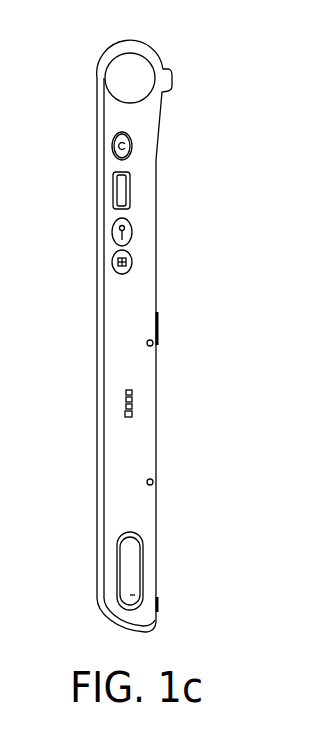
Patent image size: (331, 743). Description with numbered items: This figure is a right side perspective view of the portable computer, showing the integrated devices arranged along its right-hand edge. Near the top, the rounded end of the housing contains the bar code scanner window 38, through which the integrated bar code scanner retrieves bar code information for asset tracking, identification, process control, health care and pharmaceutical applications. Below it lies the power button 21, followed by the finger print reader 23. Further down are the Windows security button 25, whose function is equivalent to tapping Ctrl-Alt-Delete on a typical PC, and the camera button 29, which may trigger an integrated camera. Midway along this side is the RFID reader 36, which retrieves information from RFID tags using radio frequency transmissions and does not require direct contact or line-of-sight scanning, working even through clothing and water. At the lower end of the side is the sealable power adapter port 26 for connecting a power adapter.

The bar code scanner window 38 is at (152, 96).
The power button 21 is at (112, 143).
The finger print reader 23 is at (130, 188).
The Windows security button 25 is at (112, 233).
The camera button 29 is at (132, 260).
The RFID reader 36 is at (135, 407).
The sealable power adapter port 26 is at (143, 565).